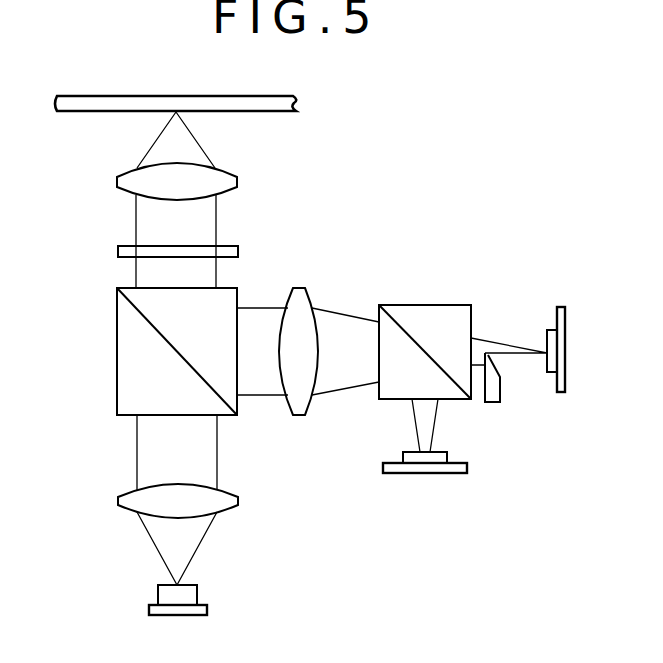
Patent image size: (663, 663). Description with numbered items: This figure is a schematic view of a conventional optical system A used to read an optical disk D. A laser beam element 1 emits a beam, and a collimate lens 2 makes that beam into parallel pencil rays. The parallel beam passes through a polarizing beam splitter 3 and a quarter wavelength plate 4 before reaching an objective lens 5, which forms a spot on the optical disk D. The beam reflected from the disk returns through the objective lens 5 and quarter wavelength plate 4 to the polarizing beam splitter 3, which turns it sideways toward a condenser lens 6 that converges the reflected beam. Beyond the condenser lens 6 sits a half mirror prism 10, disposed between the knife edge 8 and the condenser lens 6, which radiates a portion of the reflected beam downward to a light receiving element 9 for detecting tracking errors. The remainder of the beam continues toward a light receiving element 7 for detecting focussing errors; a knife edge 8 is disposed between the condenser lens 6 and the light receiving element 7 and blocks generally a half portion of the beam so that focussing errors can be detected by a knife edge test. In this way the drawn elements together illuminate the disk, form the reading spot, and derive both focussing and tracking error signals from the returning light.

The laser beam element 1 is at (158, 597).
The collimate lens 2 is at (118, 500).
The polarizing beam splitter 3 is at (117, 338).
The quarter wavelength plate 4 is at (118, 251).
The objective lens 5 is at (115, 182).
The condenser lens 6 is at (296, 287).
The light receiving element 7 is at (552, 372).
The knife edge 8 is at (488, 402).
The light receiving element 9 is at (423, 473).
The half mirror prism 10 is at (430, 305).
The optical disk D is at (72, 113).
The optical system A is at (248, 428).